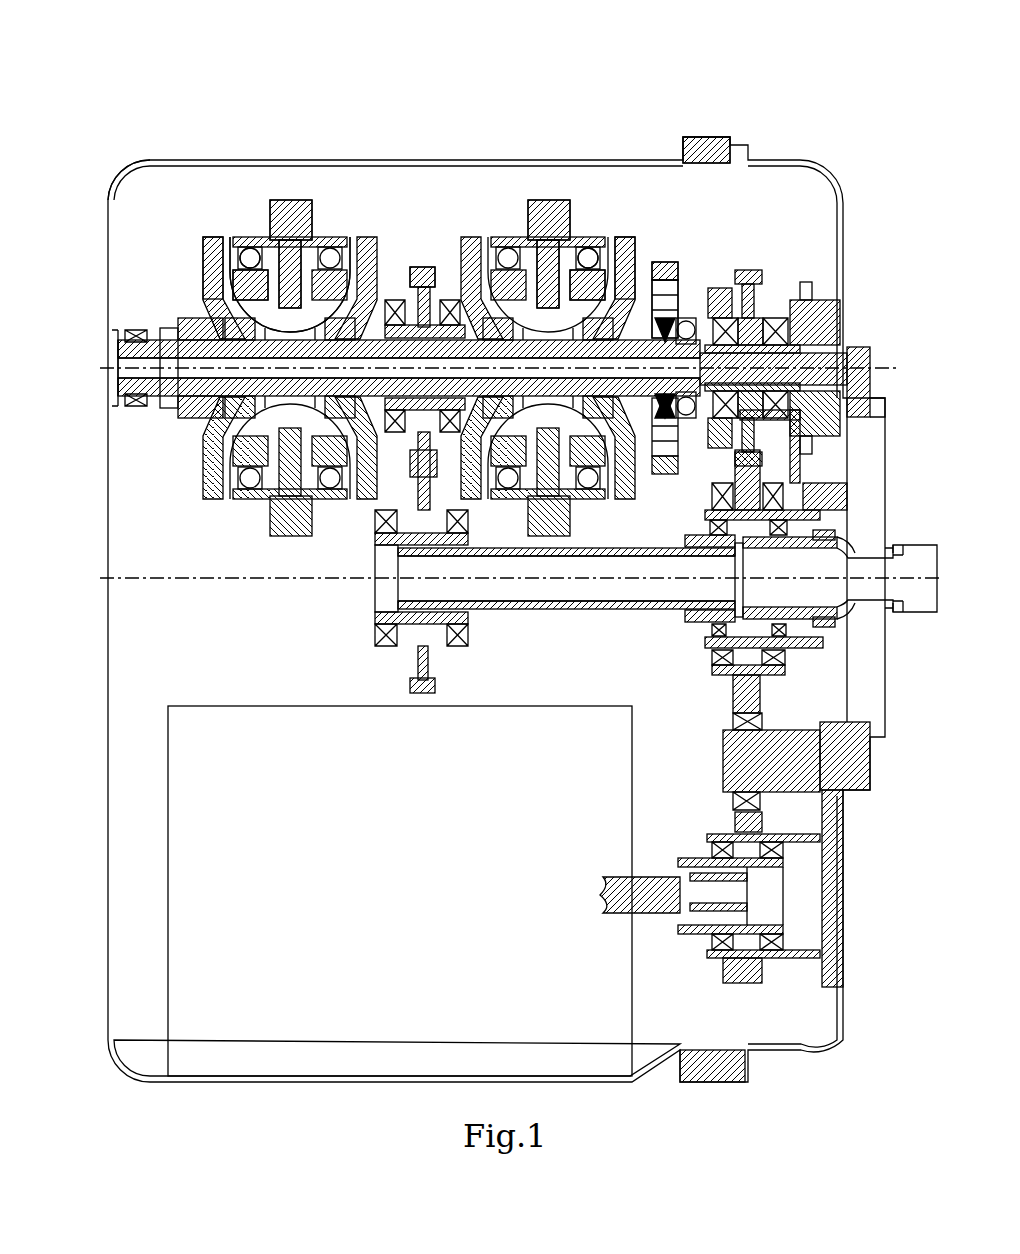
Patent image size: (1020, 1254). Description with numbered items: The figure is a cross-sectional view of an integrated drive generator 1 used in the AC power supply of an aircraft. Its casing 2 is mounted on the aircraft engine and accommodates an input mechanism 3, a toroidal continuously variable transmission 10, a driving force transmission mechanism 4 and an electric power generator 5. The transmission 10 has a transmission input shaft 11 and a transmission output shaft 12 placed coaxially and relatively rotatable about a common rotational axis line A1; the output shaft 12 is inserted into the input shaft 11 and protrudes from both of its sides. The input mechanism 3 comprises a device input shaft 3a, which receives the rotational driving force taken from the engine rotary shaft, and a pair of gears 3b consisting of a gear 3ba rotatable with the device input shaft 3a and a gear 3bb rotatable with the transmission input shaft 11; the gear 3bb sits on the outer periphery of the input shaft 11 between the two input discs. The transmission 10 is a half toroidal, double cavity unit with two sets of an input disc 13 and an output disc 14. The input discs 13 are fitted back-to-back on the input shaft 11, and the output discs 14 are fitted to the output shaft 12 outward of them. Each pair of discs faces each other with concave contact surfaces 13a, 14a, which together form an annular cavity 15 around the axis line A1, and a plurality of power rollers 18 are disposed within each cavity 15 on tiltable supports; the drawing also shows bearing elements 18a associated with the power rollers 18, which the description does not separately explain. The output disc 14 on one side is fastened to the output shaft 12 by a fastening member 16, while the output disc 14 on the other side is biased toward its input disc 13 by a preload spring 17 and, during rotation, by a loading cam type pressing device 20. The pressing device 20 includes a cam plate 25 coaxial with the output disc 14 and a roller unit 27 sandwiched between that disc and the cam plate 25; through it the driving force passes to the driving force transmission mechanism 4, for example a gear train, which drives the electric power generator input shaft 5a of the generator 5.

The integrated drive generator 1 is at (822, 142).
The casing 2 is at (135, 182).
The input mechanism 3 is at (520, 603).
The device input shaft 3a is at (575, 606).
The pair of gears 3b is at (372, 620).
The gear 3ba is at (408, 686).
The gear 3bb is at (420, 265).
The driving force transmission mechanism 4 is at (788, 297).
The electric power generator 5 is at (230, 715).
The electric power generator input shaft 5a is at (635, 912).
The toroidal continuously variable transmission 10 is at (169, 257).
The transmission input shaft 11 is at (435, 270).
The transmission output shaft 12 is at (160, 410).
The input disc 13 is at (355, 275).
The contact surface 13a is at (345, 240).
The output disc 14 is at (212, 240).
The contact surface 14a is at (272, 215).
The annular cavity 15 is at (290, 205).
The fastening member 16 is at (185, 330).
The preload spring 17 is at (668, 425).
The power roller 18 is at (282, 245).
The bearing 18a is at (330, 250).
The pressing device 20 is at (720, 152).
The cam plate 25 is at (691, 257).
The roller unit 27 is at (668, 257).
The rotational axis line A1 is at (872, 372).